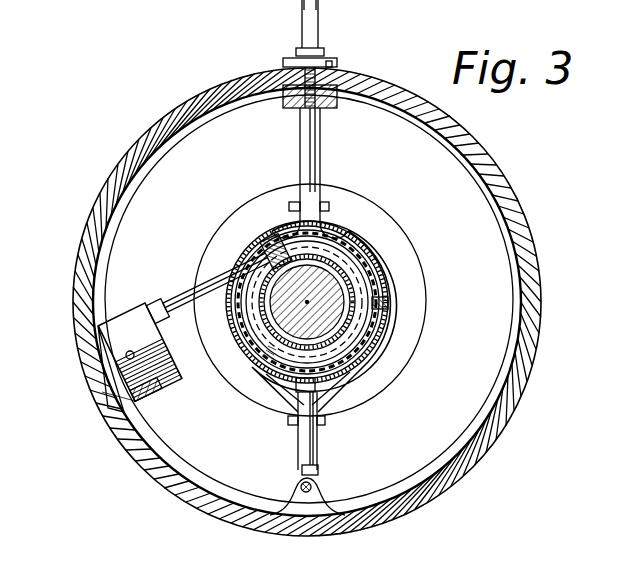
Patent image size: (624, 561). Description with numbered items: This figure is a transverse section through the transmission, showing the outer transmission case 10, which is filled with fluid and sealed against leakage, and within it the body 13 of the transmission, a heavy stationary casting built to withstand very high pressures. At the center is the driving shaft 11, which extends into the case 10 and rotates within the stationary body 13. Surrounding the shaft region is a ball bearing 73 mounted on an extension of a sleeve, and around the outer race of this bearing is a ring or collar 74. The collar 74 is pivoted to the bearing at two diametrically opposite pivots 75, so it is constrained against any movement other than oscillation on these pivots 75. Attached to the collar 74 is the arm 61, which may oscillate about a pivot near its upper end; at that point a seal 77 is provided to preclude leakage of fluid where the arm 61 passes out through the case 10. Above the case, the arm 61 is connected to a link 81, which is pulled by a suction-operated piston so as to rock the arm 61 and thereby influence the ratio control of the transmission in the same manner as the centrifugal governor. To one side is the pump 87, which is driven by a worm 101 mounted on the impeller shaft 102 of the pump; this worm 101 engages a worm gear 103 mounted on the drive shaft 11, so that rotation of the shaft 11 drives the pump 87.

The transmission case 10 is at (538, 295).
The body of the transmission 13 is at (478, 238).
The driving shaft 11 is at (367, 224).
The arm 61 is at (300, 146).
The seal 77 is at (324, 60).
The link 81 is at (298, 8).
The ball bearing 73 is at (381, 250).
The collar 74 is at (386, 273).
The pivots 75 is at (392, 303).
The worm 101 is at (262, 241).
The impeller shaft 102 is at (226, 290).
The worm gear 103 is at (266, 350).
The pump 87 is at (148, 395).